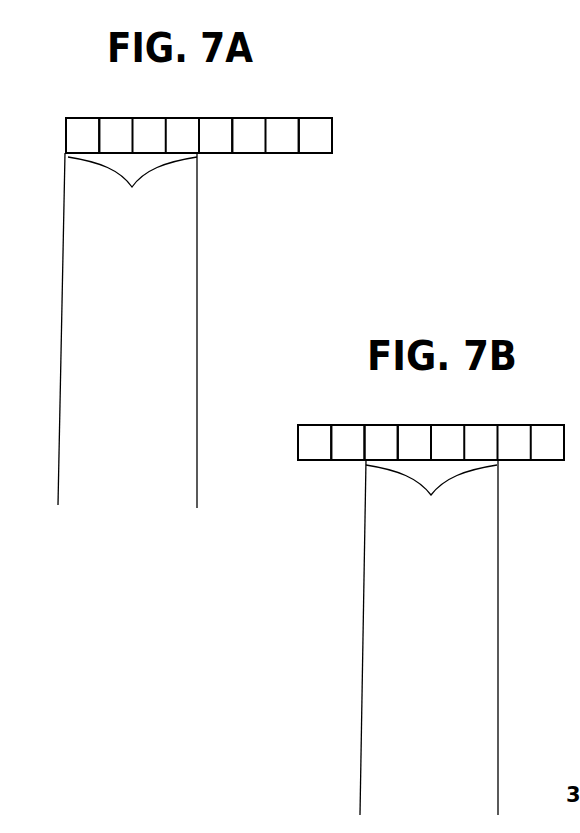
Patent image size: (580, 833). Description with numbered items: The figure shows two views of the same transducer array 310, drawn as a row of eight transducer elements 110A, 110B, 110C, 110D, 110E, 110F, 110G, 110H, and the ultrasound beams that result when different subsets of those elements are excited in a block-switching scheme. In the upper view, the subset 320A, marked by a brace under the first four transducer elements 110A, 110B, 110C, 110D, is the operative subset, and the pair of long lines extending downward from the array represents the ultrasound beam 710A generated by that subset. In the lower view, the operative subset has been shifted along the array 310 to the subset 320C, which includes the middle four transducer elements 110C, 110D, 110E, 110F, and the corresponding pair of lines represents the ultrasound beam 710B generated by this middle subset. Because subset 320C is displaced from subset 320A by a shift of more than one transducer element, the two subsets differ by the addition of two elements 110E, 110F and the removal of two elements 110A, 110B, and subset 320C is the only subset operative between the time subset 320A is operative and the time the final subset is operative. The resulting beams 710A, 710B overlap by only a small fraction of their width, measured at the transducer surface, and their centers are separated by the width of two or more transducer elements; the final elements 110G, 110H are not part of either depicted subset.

In FIG. 7A, the transducer array 310 is at (66, 134).
In FIG. 7B, the transducer array 310 is at (298, 437).
In FIG. 7A, the transducer element 110A is at (82, 117).
In FIG. 7B, the transducer element 110A is at (317, 461).
In FIG. 7B, the transducer element 110B is at (367, 395).
In FIG. 7B, the transducer element 110C is at (385, 425).
In FIG. 7A, the transducer element 110D is at (180, 118).
In FIG. 7A, the transducer element 110E is at (213, 118).
In FIG. 7B, the transducer element 110F is at (480, 425).
In FIG. 7A, the transducer element 110G is at (285, 154).
In FIG. 7A, the transducer element 110H is at (317, 154).
In FIG. 7B, the transducer element 110H is at (540, 461).
In FIG. 7A, the subset of transducer elements 320A is at (132, 187).
In FIG. 7B, the subset of transducer elements 320C is at (431, 495).
In FIG. 7A, the ultrasound beam 710A is at (197, 317).
In FIG. 7B, the ultrasound beam 710B is at (498, 628).